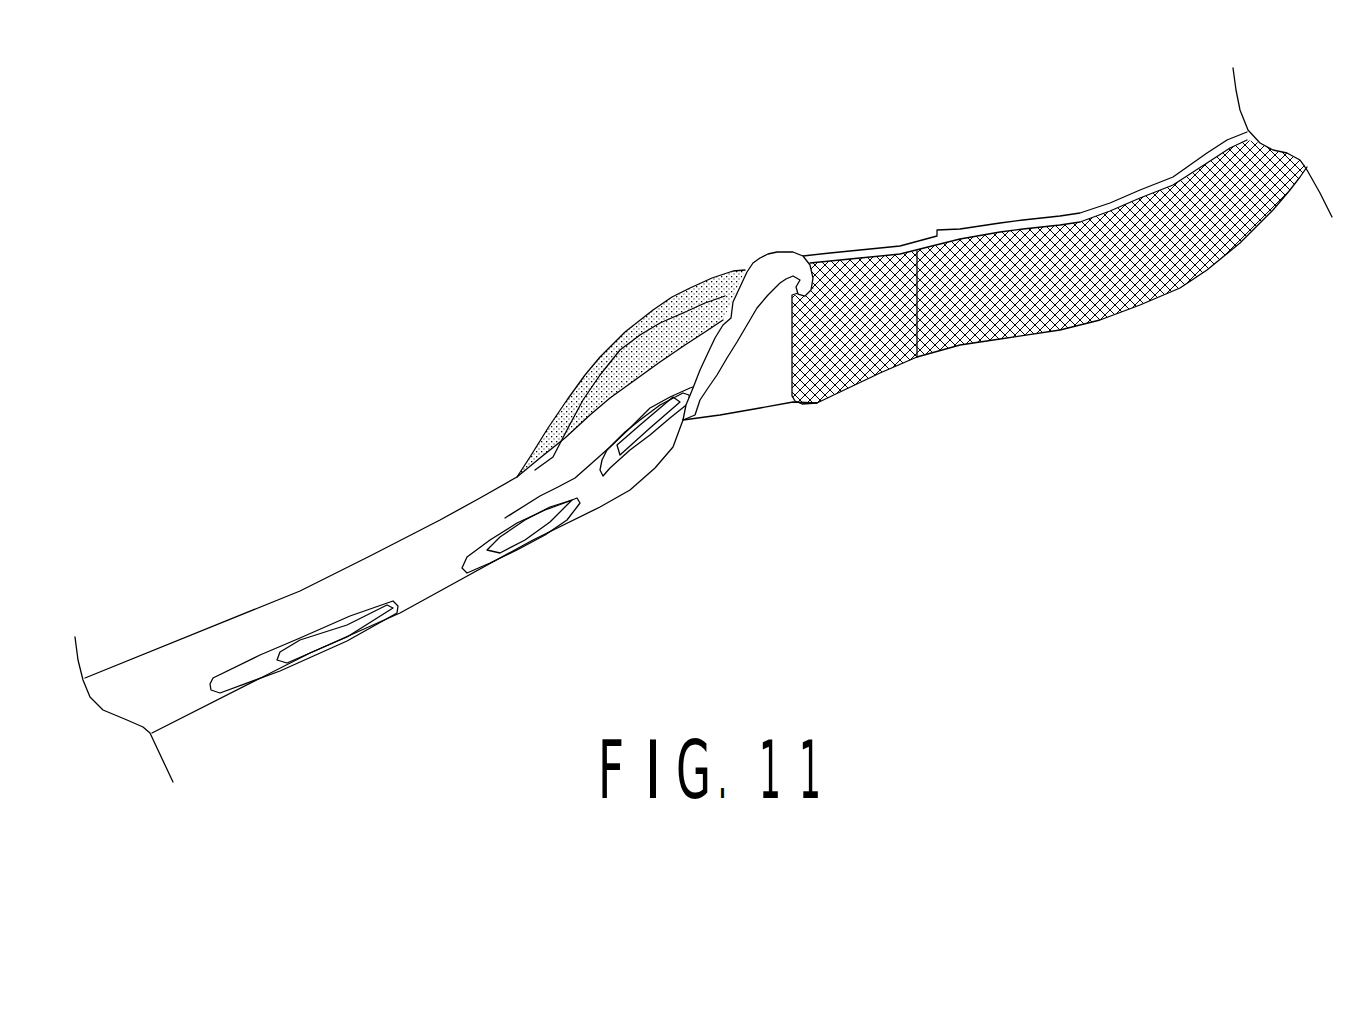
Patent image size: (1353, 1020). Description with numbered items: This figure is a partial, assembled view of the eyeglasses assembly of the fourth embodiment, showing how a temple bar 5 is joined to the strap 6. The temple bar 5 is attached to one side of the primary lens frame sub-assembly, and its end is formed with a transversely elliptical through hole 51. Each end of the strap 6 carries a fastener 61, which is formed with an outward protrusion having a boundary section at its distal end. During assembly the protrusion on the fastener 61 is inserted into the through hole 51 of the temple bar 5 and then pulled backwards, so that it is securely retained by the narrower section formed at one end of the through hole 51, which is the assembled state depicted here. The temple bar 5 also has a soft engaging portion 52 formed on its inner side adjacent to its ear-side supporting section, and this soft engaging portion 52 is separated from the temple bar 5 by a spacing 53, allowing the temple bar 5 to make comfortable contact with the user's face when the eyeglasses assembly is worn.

The temple bar 5 is at (305, 600).
The transversely elliptical through hole 51 is at (647, 442).
The soft engaging portion 52 is at (563, 417).
The spacing 53 is at (633, 360).
The strap 6 is at (1047, 303).
The fastener 61 is at (748, 398).